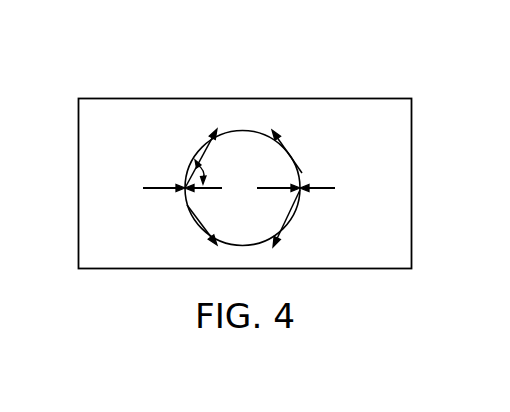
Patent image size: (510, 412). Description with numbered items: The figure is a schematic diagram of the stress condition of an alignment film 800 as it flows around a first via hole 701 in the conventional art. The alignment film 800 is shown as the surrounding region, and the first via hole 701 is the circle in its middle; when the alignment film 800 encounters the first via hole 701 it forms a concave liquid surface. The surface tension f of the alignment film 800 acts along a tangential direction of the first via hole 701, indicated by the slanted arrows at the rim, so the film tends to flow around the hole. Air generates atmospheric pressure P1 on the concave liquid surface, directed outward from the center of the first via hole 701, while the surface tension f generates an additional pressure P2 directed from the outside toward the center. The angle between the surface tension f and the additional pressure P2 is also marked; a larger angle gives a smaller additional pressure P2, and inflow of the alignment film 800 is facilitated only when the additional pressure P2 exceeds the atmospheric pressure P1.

The first via hole 701 is at (244, 165).
The alignment film 800 is at (343, 136).
The atmospheric pressure P1 is at (242, 198).
The additional pressure P2 is at (240, 178).
The surface tension f is at (243, 187).